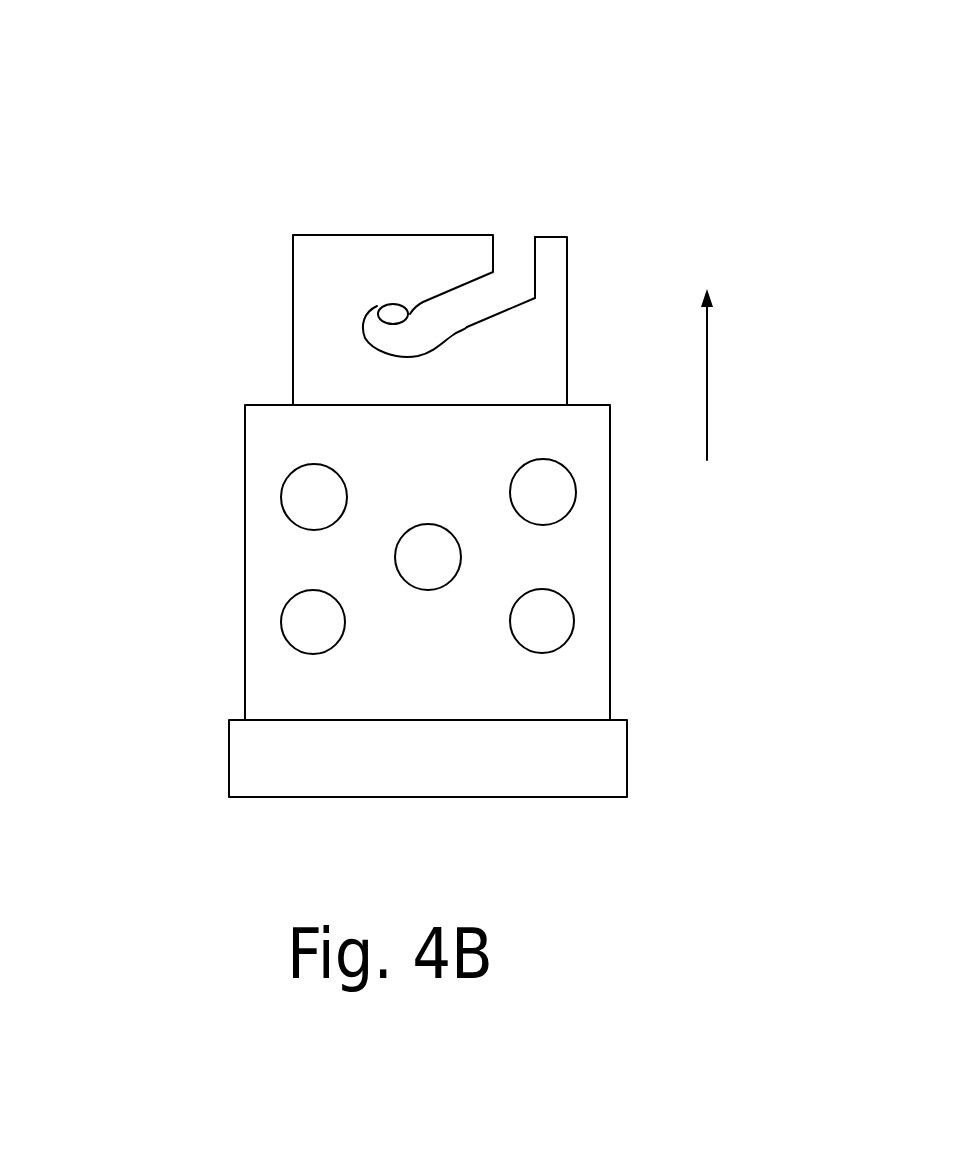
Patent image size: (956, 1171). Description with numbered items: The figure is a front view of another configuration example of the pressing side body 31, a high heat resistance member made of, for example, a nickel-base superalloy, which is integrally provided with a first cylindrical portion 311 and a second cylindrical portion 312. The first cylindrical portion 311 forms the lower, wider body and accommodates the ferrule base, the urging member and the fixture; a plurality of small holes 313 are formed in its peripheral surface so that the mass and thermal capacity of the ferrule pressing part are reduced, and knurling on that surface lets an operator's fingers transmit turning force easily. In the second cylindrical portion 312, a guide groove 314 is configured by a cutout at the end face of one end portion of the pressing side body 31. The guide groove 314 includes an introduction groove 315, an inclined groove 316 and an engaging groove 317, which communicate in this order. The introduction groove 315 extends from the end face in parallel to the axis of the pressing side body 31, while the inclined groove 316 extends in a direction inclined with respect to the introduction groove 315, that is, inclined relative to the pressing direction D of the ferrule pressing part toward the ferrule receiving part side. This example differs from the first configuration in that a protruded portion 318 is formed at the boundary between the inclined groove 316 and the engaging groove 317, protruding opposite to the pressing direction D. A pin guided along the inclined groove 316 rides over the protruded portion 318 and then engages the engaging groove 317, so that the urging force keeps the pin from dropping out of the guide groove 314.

The pressing side body 31 is at (176, 535).
The first cylindrical portion 311 is at (270, 692).
The second cylindrical portion 312 is at (303, 333).
The small holes 313 is at (560, 643).
The guide groove 314 is at (153, 84).
The introduction groove 315 is at (535, 253).
The inclined groove 316 is at (463, 325).
The engaging groove 317 is at (360, 335).
The protruded portion 318 is at (386, 305).
The pressing direction D is at (707, 373).